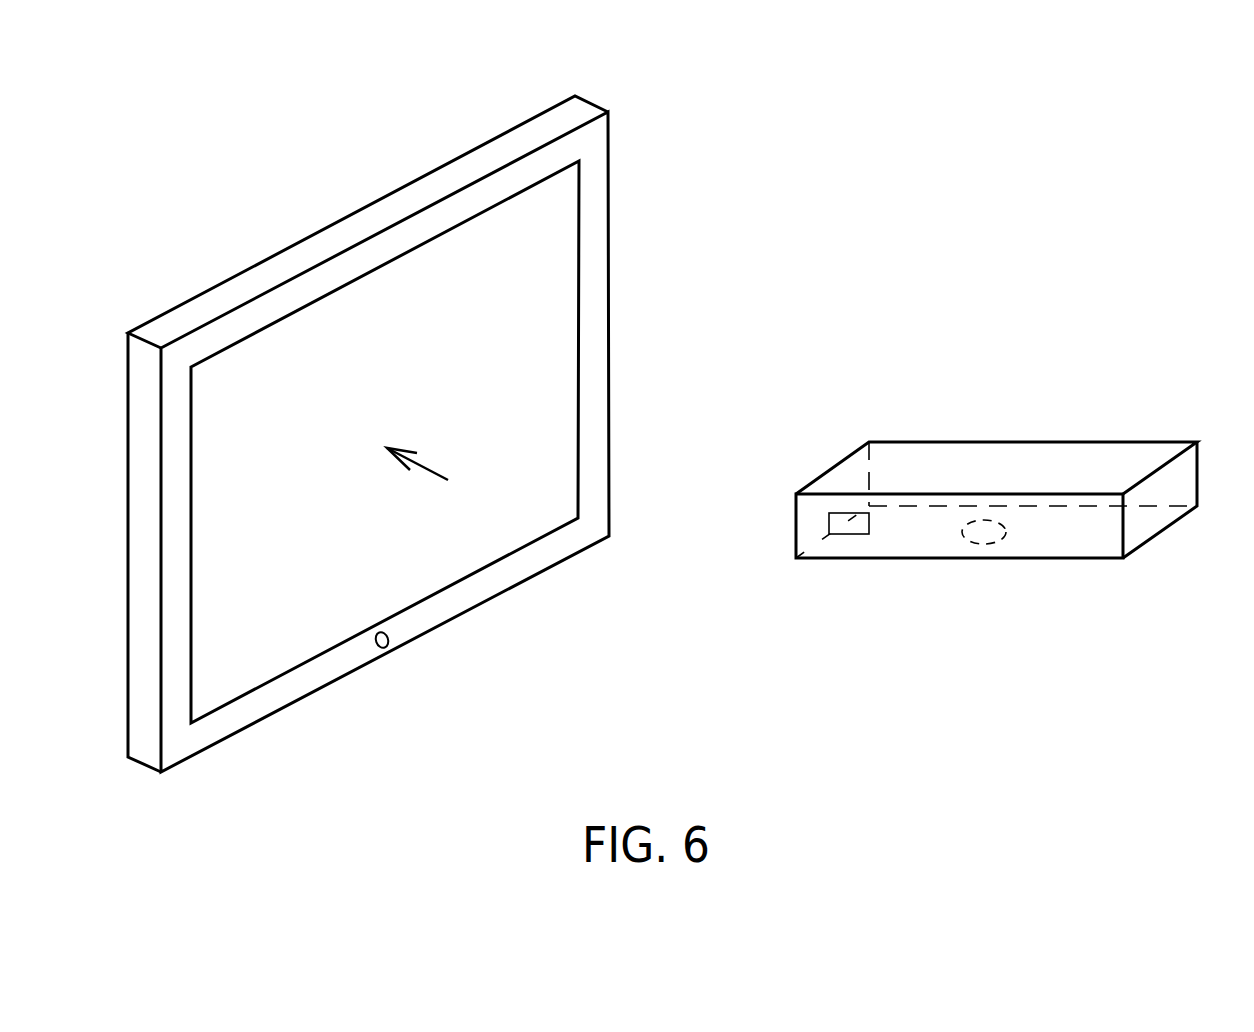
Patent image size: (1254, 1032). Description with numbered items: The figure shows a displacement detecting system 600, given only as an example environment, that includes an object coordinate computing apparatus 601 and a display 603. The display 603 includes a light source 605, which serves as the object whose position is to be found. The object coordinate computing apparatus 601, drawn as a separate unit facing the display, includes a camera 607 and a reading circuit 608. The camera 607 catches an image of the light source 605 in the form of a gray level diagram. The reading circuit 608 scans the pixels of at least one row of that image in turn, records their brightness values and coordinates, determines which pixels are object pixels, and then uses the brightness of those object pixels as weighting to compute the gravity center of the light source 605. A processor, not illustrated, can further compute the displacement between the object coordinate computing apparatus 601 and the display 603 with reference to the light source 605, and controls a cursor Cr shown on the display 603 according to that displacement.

The displacement detecting system 600 is at (1064, 101).
The object coordinate computing apparatus 601 is at (1067, 400).
The display 603 is at (265, 226).
The light source 605 is at (386, 649).
The camera 607 is at (852, 534).
The reading circuit 608 is at (982, 540).
The cursor Cr is at (437, 472).